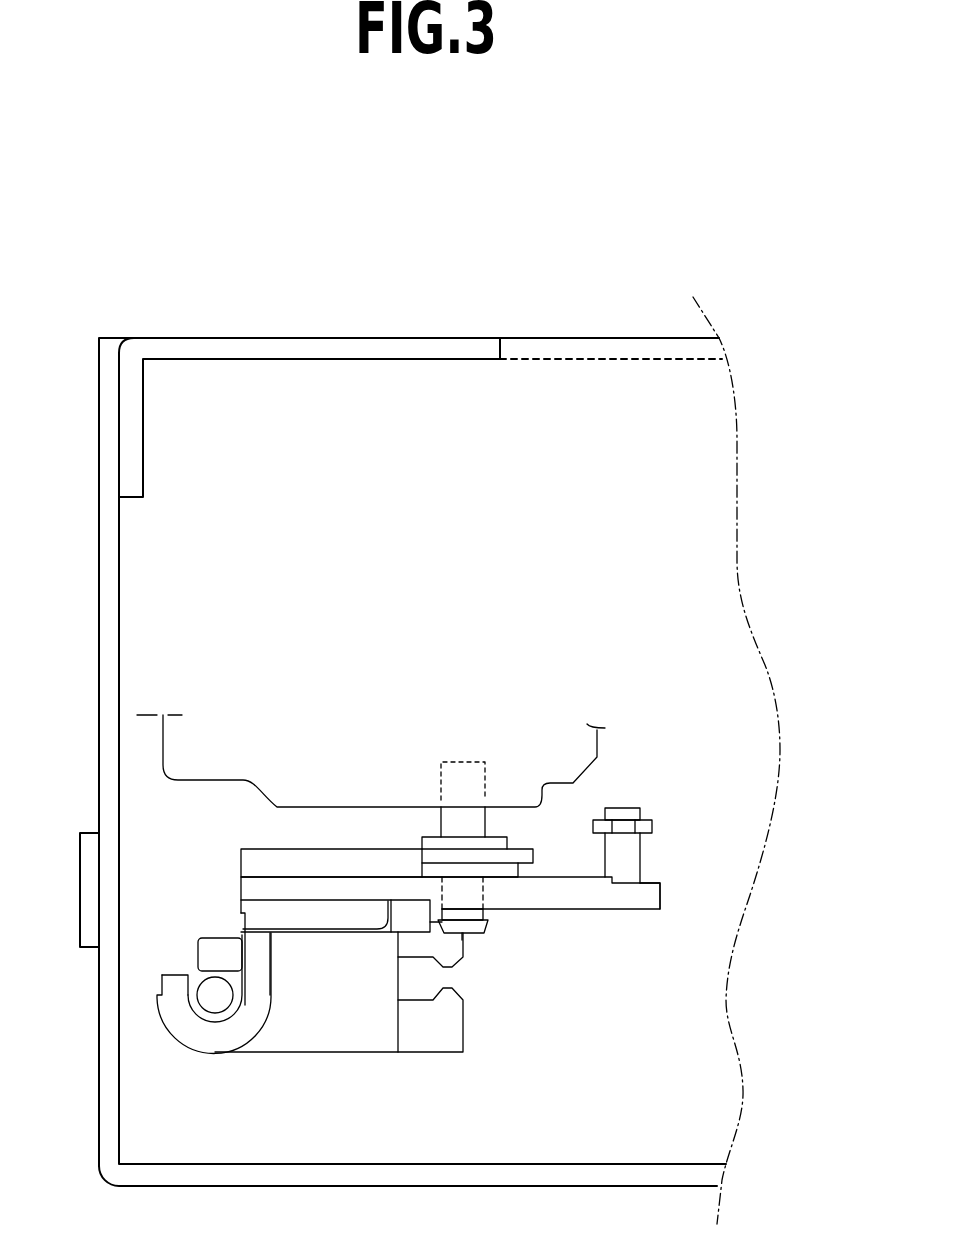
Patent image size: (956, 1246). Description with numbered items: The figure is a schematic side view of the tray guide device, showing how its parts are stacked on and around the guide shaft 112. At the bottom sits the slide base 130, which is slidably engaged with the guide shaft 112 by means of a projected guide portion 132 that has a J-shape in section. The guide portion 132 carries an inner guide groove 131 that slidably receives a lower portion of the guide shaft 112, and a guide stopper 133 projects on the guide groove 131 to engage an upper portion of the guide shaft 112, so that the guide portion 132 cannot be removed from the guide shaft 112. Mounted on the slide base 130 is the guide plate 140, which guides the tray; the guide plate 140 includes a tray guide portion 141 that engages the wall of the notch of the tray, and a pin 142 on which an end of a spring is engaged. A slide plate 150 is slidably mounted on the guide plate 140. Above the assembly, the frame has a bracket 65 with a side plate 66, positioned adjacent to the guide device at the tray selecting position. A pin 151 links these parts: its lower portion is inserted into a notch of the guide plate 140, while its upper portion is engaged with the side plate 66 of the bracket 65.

The bracket 65 is at (409, 338).
The side plate 66 is at (528, 795).
The pin 151 is at (462, 785).
The slide plate 150 is at (323, 857).
The guide plate 140 is at (560, 876).
The tray guide portion 141 is at (662, 880).
The pin 142 is at (633, 803).
The guide stopper 133 is at (218, 945).
The inner guide groove 131 is at (195, 980).
The projected guide portion 132 is at (207, 1040).
The guide shaft 112 is at (225, 998).
The slide base 130 is at (380, 1052).